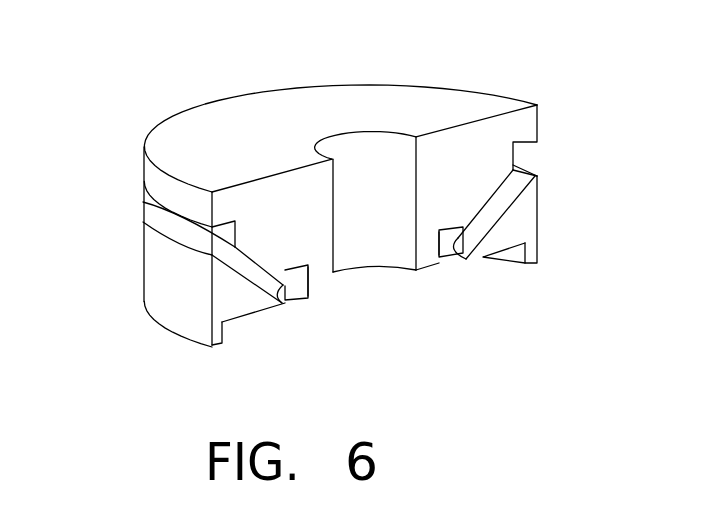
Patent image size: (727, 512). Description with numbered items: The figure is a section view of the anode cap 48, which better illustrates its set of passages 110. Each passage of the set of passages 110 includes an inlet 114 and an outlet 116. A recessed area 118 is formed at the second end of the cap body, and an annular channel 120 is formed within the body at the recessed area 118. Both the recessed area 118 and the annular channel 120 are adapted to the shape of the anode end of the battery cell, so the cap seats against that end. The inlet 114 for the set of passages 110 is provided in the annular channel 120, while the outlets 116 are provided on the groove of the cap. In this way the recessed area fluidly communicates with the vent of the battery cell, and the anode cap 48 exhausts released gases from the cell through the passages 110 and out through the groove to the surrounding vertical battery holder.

The anode cap 48 is at (120, 120).
The set of passages 110 is at (244, 262).
The inlet 114 is at (285, 287).
The outlet 116 is at (147, 224).
The recessed area 118 is at (237, 336).
The annular channel 120 is at (455, 209).